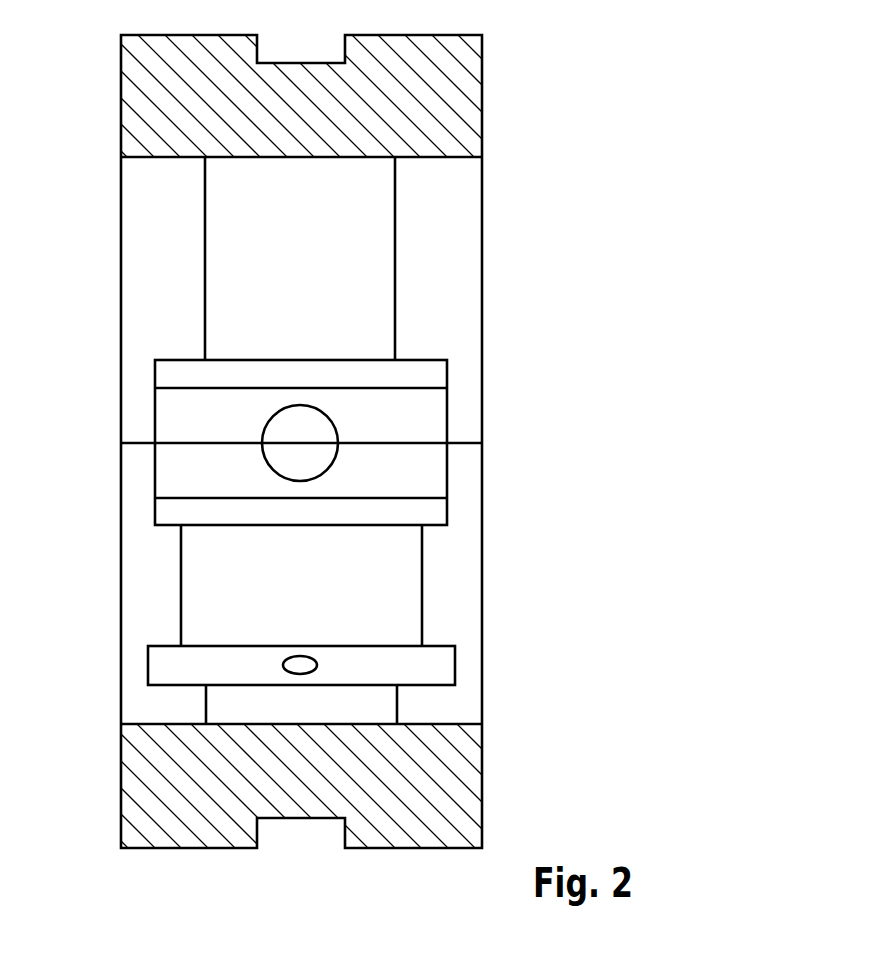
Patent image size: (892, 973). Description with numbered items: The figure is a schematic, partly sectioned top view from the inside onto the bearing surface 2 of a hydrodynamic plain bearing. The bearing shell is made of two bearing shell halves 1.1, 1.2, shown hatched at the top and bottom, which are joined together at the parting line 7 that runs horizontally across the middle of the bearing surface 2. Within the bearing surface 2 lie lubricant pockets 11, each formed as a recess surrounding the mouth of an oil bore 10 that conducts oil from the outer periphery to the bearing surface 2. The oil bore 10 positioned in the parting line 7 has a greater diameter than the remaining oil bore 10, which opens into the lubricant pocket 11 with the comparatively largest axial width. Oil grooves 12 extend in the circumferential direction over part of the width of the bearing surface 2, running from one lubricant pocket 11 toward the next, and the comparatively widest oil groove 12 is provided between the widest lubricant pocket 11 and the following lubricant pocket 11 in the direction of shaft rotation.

The bearing shell half 1.1 is at (473, 98).
The bearing shell half 1.2 is at (472, 783).
The bearing surface 2 is at (470, 308).
The parting line 7 is at (456, 443).
The oil bore 10 is at (262, 450).
The lubricant pocket 11 is at (413, 427).
The oil groove 12 is at (370, 265).